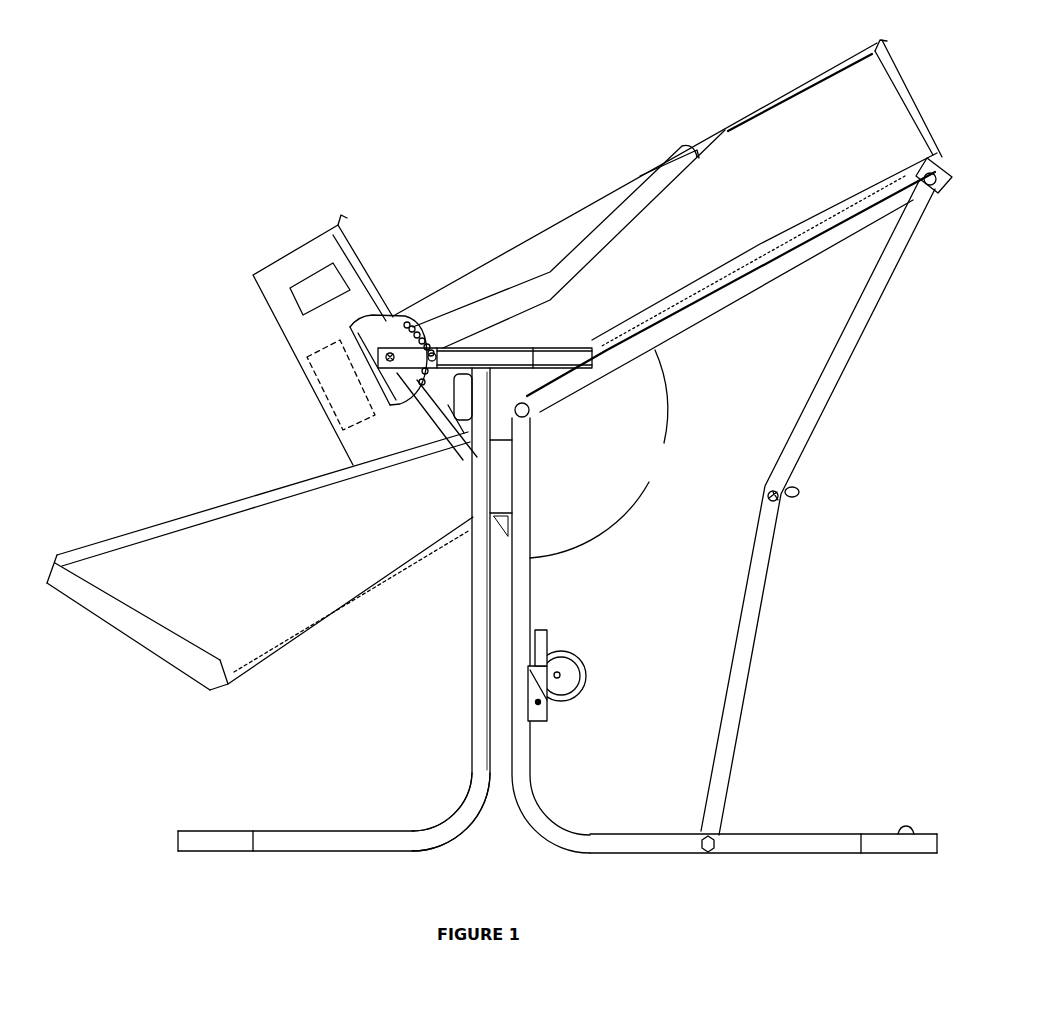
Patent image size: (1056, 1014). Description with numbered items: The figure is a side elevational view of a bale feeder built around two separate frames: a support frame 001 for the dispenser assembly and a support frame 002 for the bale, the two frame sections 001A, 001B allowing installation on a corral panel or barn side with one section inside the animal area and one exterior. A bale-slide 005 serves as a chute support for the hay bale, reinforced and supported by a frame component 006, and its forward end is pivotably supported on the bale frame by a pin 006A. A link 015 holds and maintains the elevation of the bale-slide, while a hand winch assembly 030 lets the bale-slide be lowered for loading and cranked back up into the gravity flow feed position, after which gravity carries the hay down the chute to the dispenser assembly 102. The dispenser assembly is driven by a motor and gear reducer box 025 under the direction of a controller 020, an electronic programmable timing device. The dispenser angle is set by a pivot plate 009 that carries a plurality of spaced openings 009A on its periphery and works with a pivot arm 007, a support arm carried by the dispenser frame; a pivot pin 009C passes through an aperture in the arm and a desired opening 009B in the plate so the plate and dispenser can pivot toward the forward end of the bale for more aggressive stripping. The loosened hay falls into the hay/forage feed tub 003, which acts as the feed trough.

The support frame for dispenser assembly 001 is at (351, 828).
The frame section 001A is at (477, 805).
The frame section 001B is at (553, 820).
The support frame for the bale 002 is at (805, 826).
The hay/forage feed tub 003 is at (167, 665).
The bale-slide 005 is at (923, 112).
The frame component 006 is at (957, 178).
The pin 006A is at (534, 411).
The pivot arm 007 is at (377, 371).
The pivot plate 009 is at (396, 313).
The spaced openings 009A is at (419, 323).
The opening 009B is at (548, 225).
The pivot pin 009C is at (384, 357).
The link 015 is at (829, 415).
The controller 020 is at (283, 294).
The motor and gear reducer box 025 is at (299, 355).
The hand winch assembly 030 is at (591, 657).
The dispenser assembly 102 is at (294, 241).